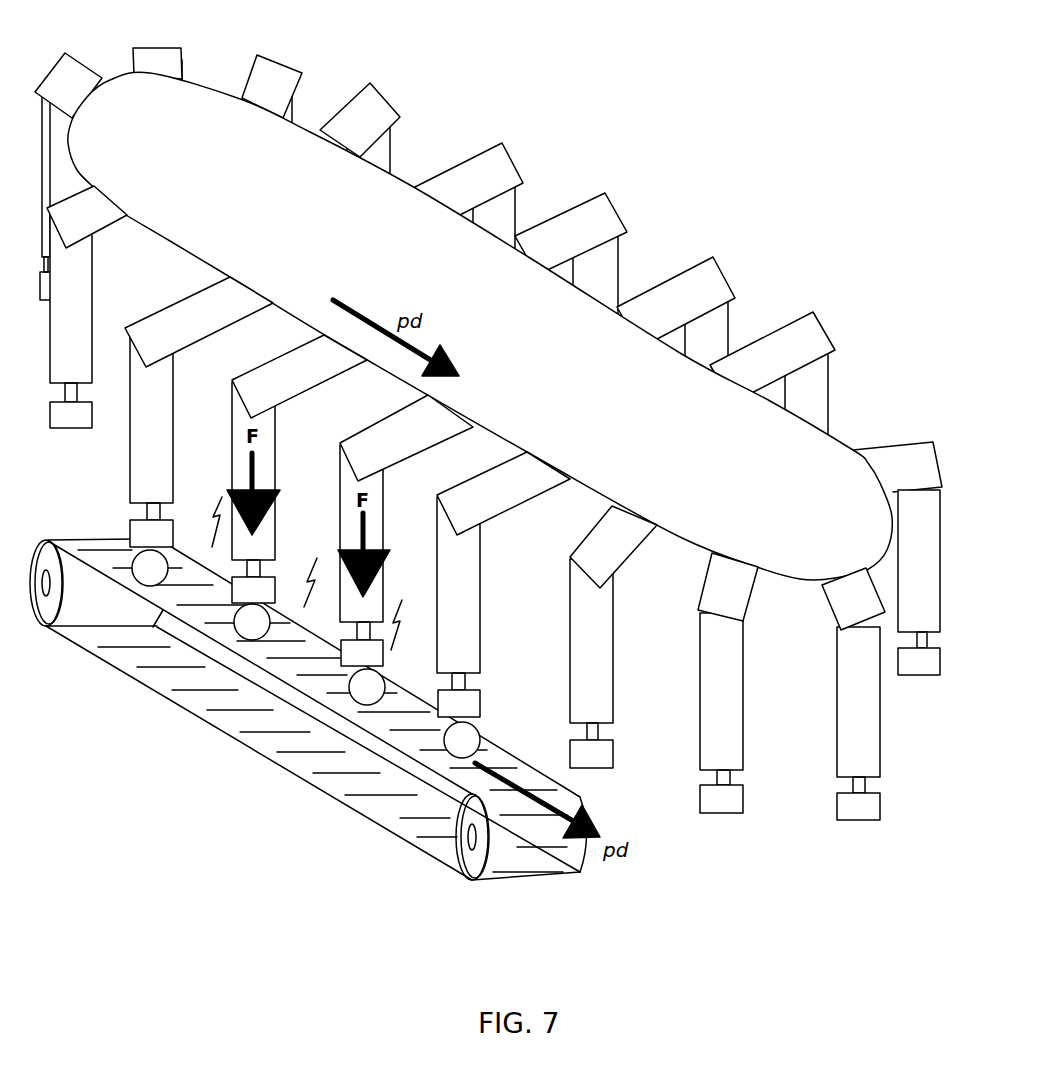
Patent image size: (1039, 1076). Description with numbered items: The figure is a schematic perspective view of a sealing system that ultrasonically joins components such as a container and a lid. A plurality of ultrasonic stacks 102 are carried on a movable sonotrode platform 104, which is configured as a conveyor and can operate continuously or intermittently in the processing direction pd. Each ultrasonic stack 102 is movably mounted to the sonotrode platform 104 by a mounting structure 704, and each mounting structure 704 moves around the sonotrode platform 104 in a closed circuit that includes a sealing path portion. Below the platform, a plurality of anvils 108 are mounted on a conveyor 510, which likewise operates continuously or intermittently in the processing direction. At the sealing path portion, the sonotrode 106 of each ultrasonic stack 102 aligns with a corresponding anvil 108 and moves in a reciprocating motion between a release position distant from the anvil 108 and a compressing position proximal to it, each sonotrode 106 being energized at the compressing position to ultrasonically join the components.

The ultrasonic stack 102 is at (853, 735).
The movable sonotrode platform 104 is at (810, 448).
The sonotrode 106 is at (867, 812).
The anvil 108 is at (463, 760).
The conveyor 510 is at (163, 680).
The mounting structure 704 is at (705, 292).